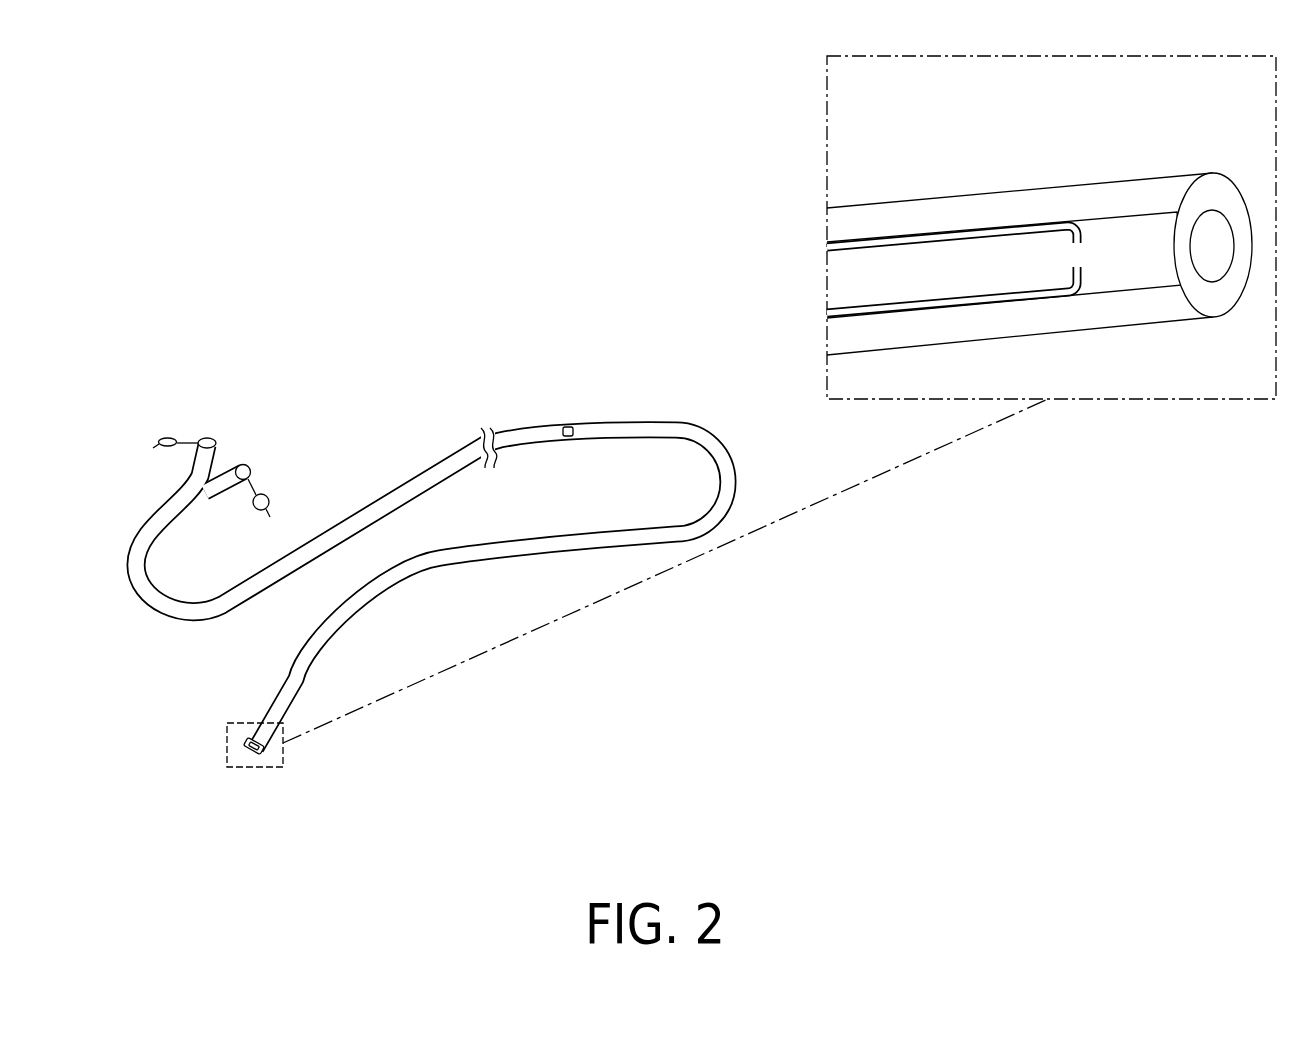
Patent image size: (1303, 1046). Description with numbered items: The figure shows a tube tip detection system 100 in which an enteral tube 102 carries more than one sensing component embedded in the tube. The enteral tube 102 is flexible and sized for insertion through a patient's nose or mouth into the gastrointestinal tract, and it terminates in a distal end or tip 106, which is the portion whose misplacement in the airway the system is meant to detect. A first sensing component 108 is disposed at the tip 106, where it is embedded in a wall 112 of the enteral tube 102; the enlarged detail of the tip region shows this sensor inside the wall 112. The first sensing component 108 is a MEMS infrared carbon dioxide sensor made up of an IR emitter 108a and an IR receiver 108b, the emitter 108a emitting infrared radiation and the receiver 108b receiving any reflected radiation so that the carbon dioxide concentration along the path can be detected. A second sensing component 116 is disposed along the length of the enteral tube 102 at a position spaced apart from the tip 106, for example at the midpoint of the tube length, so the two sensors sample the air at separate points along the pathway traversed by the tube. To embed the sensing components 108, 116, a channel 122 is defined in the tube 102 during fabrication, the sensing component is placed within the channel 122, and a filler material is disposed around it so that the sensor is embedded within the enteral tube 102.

The tube tip detection system 100 is at (432, 525).
The enteral tube 102 is at (377, 500).
The distal end or tip 106 is at (257, 770).
The first sensing component 108 is at (264, 748).
The IR emitter 108a is at (1033, 294).
The IR receiver 108b is at (1022, 222).
The wall 112 is at (1138, 188).
The second sensing component 116 is at (567, 427).
The channel 122 is at (1122, 260).